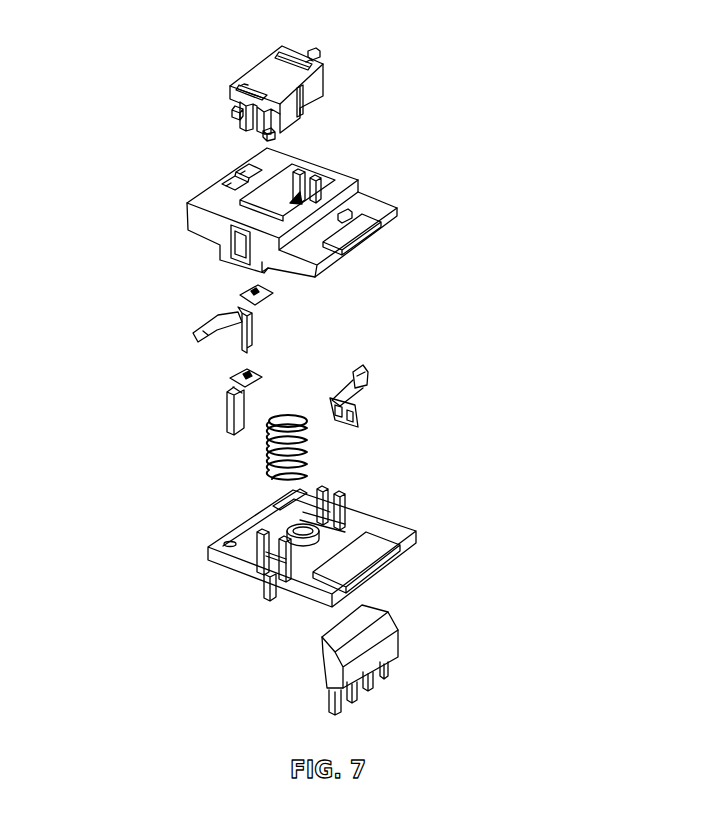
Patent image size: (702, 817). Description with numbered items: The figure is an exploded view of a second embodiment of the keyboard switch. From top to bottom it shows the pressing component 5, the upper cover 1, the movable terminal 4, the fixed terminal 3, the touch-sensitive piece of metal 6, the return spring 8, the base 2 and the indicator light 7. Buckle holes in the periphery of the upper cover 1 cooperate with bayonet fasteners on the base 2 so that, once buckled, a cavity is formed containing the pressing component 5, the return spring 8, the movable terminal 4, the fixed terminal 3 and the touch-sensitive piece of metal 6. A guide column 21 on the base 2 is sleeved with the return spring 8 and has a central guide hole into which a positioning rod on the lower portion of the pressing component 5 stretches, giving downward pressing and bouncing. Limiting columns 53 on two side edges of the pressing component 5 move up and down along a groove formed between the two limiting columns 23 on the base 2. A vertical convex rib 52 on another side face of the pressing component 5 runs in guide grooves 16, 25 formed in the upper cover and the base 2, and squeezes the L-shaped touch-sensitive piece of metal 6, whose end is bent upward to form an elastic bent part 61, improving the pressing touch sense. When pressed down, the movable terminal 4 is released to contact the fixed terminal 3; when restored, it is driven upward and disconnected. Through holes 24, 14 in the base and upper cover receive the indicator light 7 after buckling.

The upper cover 1 is at (207, 222).
The base 2 is at (257, 583).
The fixed terminal 3 is at (213, 427).
The movable terminal 4 is at (203, 335).
The pressing component 5 is at (228, 88).
The touch-sensitive piece of metal 6 is at (366, 391).
The indicator light 7 is at (398, 641).
The return spring 8 is at (267, 463).
The through hole 14 is at (325, 238).
The guide groove 16 is at (292, 191).
The guide column 21 is at (357, 522).
The limiting columns 23 is at (335, 484).
The through hole 24 is at (357, 558).
The guide groove 25 is at (338, 556).
The convex rib 52 is at (307, 102).
The limiting columns 53 is at (308, 54).
The elastic bent part 61 is at (353, 370).